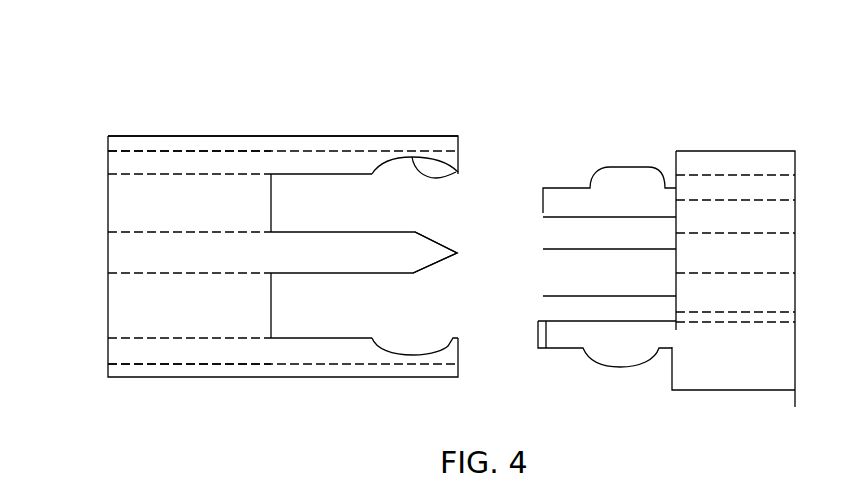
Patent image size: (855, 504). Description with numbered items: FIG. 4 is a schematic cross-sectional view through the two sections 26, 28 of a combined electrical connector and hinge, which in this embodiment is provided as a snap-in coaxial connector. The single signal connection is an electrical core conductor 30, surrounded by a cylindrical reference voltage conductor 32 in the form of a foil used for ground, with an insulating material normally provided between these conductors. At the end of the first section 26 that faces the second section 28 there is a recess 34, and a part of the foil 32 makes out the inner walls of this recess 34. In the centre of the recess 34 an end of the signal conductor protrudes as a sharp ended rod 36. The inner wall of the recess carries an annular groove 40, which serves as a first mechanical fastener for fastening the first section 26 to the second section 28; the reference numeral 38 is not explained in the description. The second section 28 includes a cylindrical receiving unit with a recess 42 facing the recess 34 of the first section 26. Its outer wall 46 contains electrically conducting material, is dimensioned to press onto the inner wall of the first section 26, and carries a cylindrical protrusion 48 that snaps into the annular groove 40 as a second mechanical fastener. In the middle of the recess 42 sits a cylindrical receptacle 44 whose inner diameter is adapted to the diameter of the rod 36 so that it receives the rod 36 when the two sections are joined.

The first section 26 is at (228, 108).
The second section 28 is at (683, 94).
The electrical core conductor 30 is at (122, 260).
The cylindrical reference voltage conductor 32 is at (122, 165).
The recess 34 is at (353, 223).
The sharp ended rod 36 is at (400, 265).
The upper wall 38 is at (320, 145).
The annular groove 40 is at (440, 176).
The recess 42 is at (633, 250).
The cylindrical receptacle 44 is at (582, 296).
The outer wall 46 is at (545, 348).
The cylindrical protrusion 48 is at (632, 157).